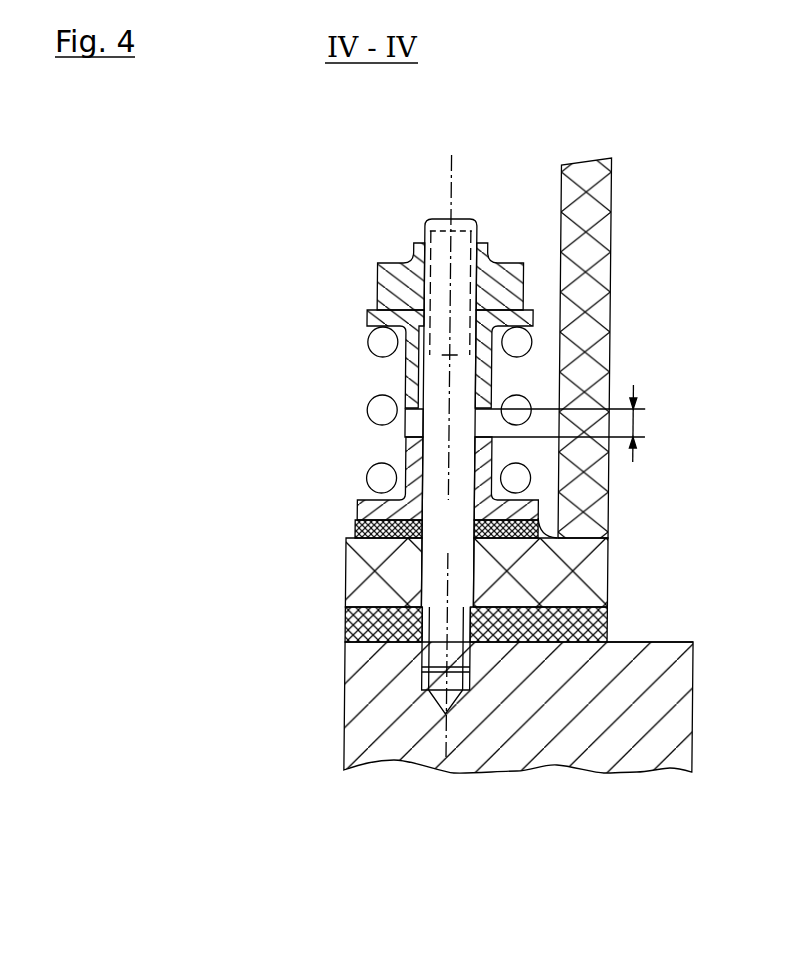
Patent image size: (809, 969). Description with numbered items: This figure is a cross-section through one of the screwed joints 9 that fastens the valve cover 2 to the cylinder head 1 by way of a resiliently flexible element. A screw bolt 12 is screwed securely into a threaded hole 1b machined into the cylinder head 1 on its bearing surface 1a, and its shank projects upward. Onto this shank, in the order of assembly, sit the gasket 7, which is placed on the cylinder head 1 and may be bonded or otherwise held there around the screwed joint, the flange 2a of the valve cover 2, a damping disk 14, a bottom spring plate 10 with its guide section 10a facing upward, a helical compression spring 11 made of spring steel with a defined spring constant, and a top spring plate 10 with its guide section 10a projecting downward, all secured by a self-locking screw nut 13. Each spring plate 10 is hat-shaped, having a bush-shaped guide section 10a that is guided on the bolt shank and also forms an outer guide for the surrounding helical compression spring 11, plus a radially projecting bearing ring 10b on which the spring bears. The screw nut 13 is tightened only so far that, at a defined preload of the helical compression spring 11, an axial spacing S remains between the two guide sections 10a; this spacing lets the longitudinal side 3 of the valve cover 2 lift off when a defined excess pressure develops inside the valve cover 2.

The cylinder head 1 is at (520, 683).
The bearing surface 1a is at (641, 642).
The threaded hole 1b is at (474, 656).
The valve cover 2 is at (610, 232).
The flange 2a is at (347, 578).
The longitudinal side 3 is at (342, 713).
The gasket 7 is at (347, 628).
The screwed joint 9 is at (498, 355).
The spring plates 10 is at (397, 331).
The guide section 10a is at (492, 366).
The bearing ring 10b is at (532, 321).
The helical compression spring 11 is at (367, 407).
The screw bolt 12 is at (469, 540).
The screw nut 13 is at (399, 261).
The damping disk 14 is at (354, 524).
The axial spacing S is at (633, 423).